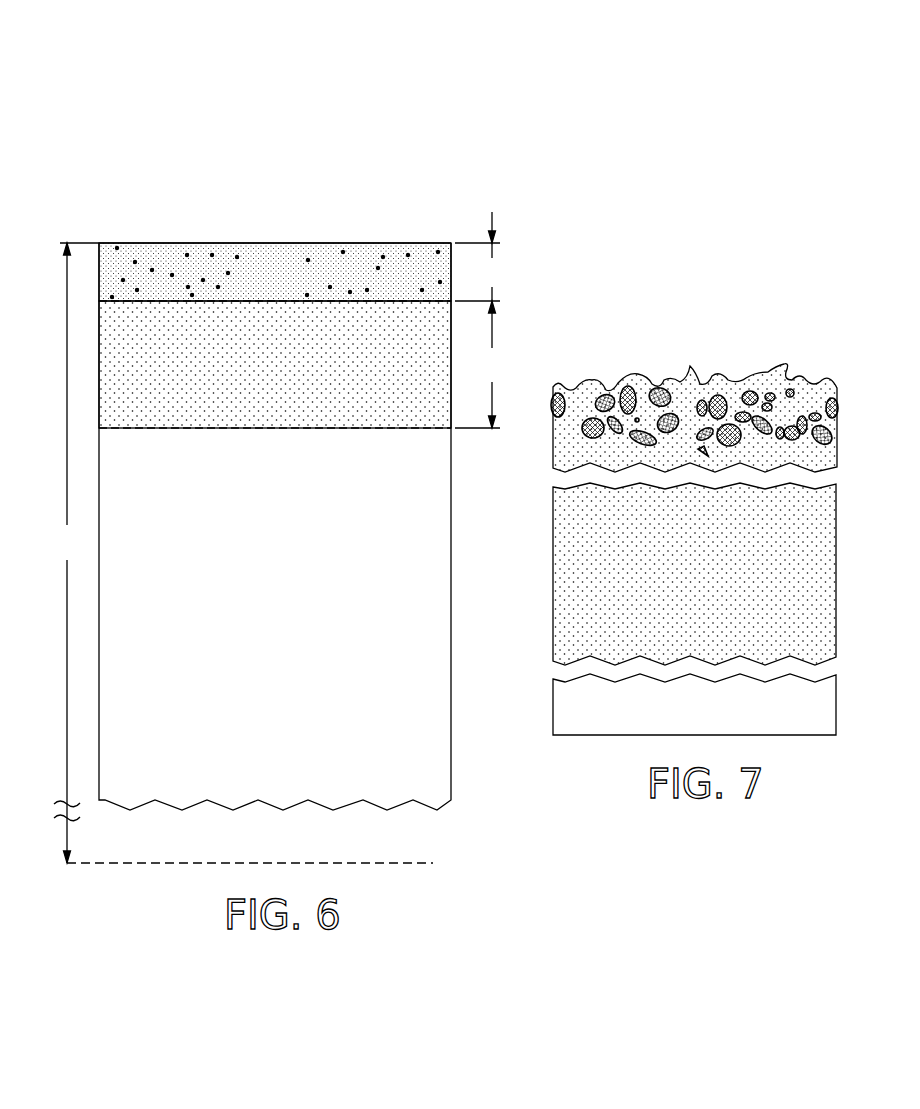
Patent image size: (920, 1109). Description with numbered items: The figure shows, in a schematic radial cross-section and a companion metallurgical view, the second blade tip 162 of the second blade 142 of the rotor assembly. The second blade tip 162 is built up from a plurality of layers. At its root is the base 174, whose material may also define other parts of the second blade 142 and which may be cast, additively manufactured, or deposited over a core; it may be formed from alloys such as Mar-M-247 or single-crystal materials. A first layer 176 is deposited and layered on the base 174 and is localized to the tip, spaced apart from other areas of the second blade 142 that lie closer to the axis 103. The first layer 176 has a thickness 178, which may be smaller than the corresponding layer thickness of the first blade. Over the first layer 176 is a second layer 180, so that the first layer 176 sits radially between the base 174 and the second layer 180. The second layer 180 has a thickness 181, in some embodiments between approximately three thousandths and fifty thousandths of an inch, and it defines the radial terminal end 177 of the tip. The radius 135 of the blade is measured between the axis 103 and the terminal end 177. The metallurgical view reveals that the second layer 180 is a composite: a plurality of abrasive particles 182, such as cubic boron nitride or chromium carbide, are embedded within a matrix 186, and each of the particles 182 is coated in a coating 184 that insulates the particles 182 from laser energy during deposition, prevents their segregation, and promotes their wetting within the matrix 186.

In FIG. 6, the second blade 142 is at (104, 205).
In FIG. 6, the second blade tip 162 is at (169, 232).
In FIG. 7, the second blade tip 162 is at (855, 470).
In FIG. 6, the radial terminal end 177 is at (298, 243).
In FIG. 7, the radial terminal end 177 is at (746, 380).
In FIG. 6, the second layer 180 is at (295, 285).
In FIG. 7, the second layer 180 is at (850, 410).
In FIG. 6, the first layer 176 is at (292, 378).
In FIG. 7, the first layer 176 is at (848, 557).
In FIG. 6, the base 174 is at (292, 635).
In FIG. 7, the base 174 is at (848, 705).
In FIG. 6, the thickness 181 is at (489, 256).
In FIG. 6, the thickness 178 is at (489, 364).
In FIG. 6, the radius 135 is at (72, 553).
In FIG. 6, the axis 103 is at (360, 862).
In FIG. 7, the abrasive particles 182 is at (628, 390).
In FIG. 7, the coating 184 is at (612, 385).
In FIG. 7, the matrix 186 is at (583, 390).